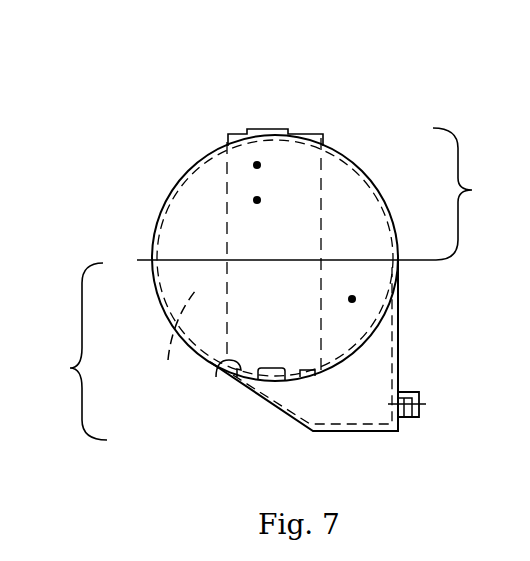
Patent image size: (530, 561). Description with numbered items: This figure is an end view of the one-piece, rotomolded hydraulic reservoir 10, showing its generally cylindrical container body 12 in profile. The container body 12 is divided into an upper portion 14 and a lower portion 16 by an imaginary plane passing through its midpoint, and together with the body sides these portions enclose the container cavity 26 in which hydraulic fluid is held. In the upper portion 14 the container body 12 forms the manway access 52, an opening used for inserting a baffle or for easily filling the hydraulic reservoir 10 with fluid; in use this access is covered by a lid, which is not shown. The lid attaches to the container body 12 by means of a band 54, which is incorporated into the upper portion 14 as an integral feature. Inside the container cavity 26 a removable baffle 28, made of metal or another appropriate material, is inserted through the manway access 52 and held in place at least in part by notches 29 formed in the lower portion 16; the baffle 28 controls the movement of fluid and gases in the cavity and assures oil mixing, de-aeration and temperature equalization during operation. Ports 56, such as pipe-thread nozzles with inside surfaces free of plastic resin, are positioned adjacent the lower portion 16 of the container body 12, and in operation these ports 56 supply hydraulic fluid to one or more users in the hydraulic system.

The hydraulic reservoir 10 is at (423, 67).
The container body 12 is at (360, 168).
The upper portion 14 is at (471, 194).
The lower portion 16 is at (68, 351).
The container cavity 26 is at (169, 352).
The removable baffle 28 is at (253, 200).
The notches 29 is at (212, 364).
The manway access 52 is at (253, 165).
The band 54 is at (317, 133).
The ports 56 is at (420, 417).